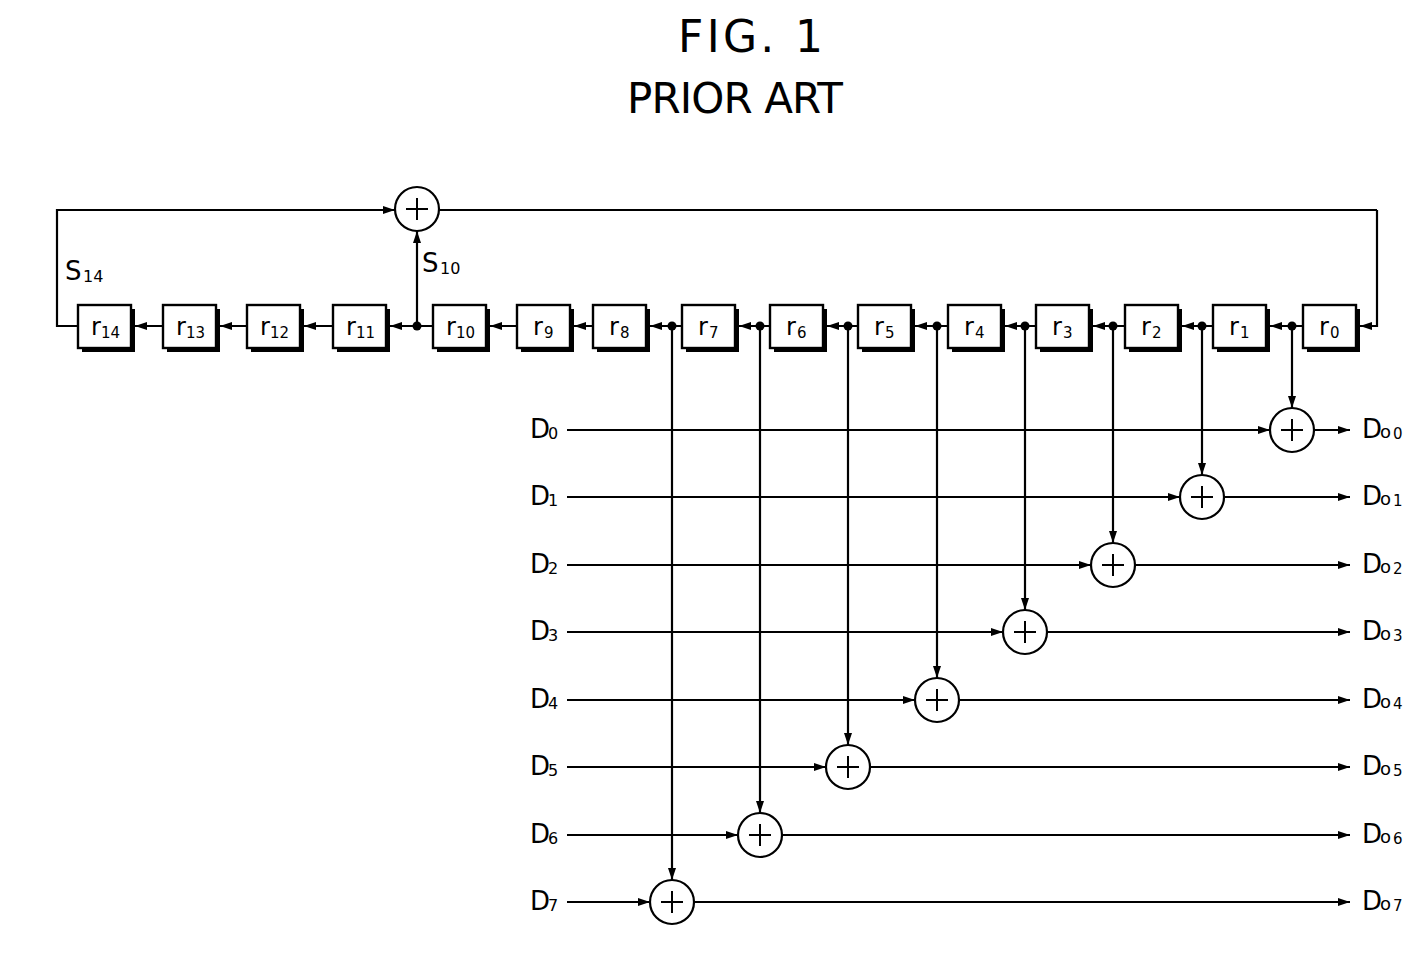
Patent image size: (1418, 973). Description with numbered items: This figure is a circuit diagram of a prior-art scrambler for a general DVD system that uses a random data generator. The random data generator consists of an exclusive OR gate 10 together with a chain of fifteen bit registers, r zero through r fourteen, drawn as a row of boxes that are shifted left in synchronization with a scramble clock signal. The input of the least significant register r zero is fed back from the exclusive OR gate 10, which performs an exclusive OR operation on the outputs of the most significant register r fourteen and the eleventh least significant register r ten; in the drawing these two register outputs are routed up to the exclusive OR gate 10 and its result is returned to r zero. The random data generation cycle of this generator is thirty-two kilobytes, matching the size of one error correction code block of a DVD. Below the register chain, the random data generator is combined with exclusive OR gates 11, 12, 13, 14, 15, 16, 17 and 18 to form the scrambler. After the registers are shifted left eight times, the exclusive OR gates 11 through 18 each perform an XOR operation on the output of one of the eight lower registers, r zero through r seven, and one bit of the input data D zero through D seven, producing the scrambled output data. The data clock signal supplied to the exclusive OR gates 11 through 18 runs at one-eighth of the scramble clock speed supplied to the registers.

The exclusive OR gate 10 is at (418, 186).
The exclusive OR gate 11 is at (1308, 414).
The exclusive OR gate 12 is at (1218, 483).
The exclusive OR gate 13 is at (1129, 551).
The exclusive OR gate 14 is at (1041, 618).
The exclusive OR gate 15 is at (953, 686).
The exclusive OR gate 16 is at (864, 753).
The exclusive OR gate 17 is at (776, 821).
The exclusive OR gate 18 is at (688, 888).